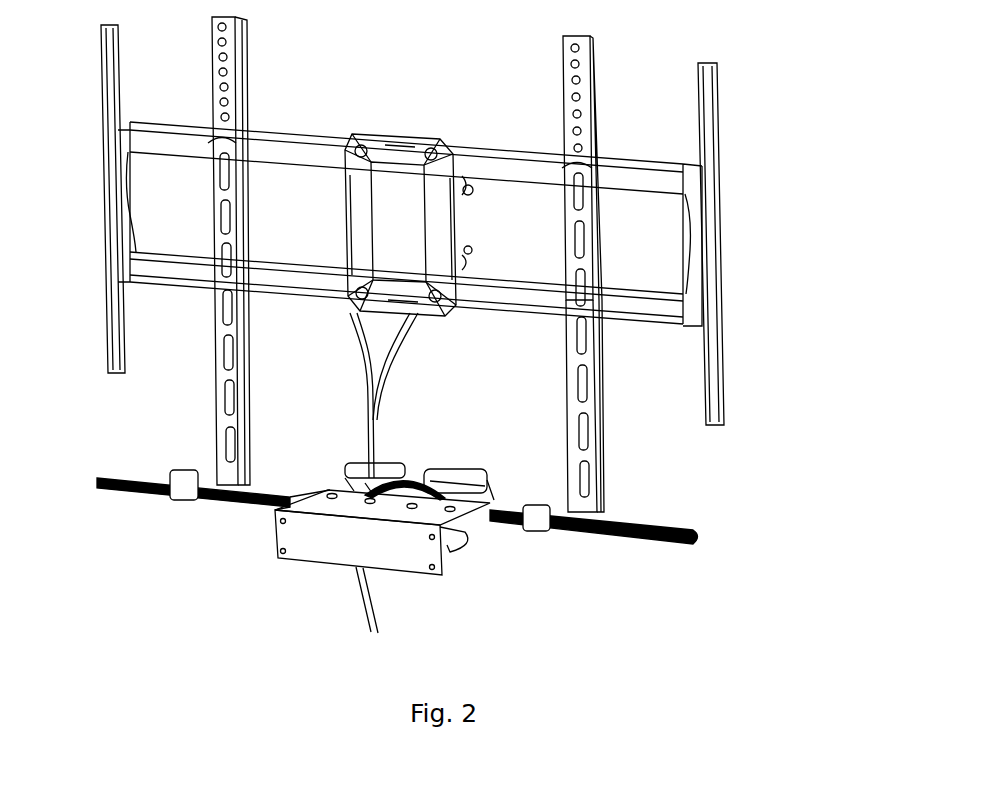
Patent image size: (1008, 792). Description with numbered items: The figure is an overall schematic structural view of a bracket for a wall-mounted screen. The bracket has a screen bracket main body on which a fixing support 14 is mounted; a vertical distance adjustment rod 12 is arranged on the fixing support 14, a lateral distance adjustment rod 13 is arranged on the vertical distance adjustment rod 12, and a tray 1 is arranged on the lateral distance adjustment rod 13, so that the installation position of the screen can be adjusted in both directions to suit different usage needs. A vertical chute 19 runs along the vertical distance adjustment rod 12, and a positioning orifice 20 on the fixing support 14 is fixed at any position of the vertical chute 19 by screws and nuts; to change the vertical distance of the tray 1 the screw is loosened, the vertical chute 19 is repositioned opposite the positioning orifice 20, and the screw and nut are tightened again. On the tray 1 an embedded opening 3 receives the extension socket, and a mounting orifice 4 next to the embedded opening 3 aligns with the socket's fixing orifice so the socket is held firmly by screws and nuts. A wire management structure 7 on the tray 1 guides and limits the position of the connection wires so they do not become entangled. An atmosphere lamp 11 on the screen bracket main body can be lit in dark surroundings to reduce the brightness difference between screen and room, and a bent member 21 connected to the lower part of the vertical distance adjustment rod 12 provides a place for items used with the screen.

The tray 1 is at (335, 508).
The embedded opening 3 is at (388, 540).
The mounting orifice 4 is at (448, 552).
The wire management structure 7 is at (510, 525).
The atmosphere lamp 11 is at (722, 355).
The vertical distance adjustment rod 12 is at (598, 478).
The lateral distance adjustment rod 13 is at (650, 538).
The fixing support 14 is at (400, 205).
The vertical chute 19 is at (575, 245).
The positioning orifice 20 is at (578, 112).
The bent member 21 is at (180, 485).